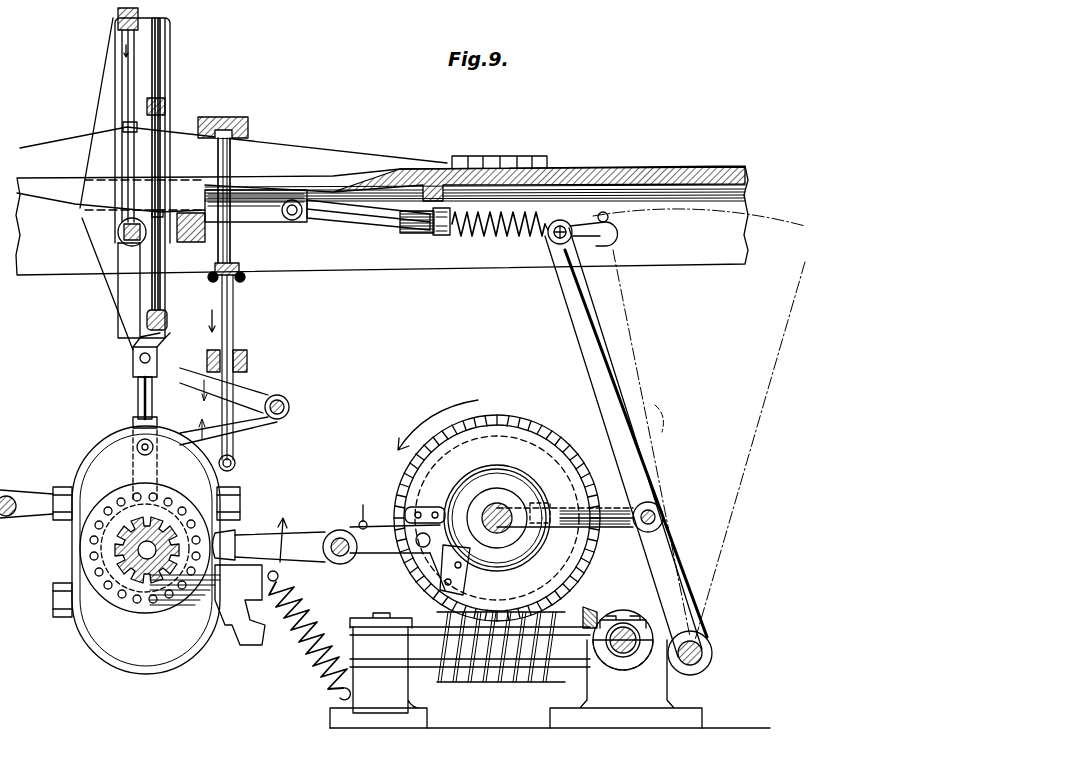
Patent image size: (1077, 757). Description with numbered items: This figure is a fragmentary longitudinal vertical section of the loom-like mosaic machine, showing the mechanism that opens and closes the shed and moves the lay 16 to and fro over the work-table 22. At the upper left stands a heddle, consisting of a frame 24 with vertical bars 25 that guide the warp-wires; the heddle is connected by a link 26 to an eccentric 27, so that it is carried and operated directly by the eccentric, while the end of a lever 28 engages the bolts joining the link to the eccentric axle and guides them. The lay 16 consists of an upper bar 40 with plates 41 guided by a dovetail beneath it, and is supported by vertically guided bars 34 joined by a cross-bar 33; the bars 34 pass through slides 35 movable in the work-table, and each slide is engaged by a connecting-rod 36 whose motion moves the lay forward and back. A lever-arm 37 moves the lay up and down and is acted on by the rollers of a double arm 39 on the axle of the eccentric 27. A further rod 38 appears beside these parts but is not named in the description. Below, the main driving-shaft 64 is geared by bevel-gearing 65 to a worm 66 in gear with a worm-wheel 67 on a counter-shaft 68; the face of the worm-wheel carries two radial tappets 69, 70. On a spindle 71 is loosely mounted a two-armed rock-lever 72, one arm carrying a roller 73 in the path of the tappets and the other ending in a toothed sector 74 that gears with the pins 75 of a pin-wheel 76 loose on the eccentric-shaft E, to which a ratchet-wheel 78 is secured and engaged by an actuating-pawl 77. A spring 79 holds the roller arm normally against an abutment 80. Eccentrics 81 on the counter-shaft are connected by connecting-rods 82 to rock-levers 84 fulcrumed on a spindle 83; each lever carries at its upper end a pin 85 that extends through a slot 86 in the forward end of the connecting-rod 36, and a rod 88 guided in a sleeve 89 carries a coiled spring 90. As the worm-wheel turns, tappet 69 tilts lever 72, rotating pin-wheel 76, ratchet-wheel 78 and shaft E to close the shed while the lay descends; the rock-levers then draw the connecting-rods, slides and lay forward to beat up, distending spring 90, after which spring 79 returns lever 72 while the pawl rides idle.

The lay 16 is at (244, 128).
The work-table 22 is at (620, 172).
The frame 24 is at (120, 105).
The vertical bars 25 is at (128, 80).
The link 26 is at (135, 300).
The eccentric 27 is at (98, 455).
The lever 28 is at (242, 396).
The cross-bar 33 is at (242, 270).
The vertically-guided bars 34 is at (230, 240).
The slides 35 is at (292, 222).
The connecting-rod 36 is at (375, 224).
The lever-arm 37 is at (38, 492).
The rod 38 is at (234, 324).
The double arm 39 is at (147, 586).
The upper bar 40 is at (210, 118).
The plates 41 is at (234, 136).
The main driving-shaft 64 is at (626, 636).
The bevel-gearing 65 is at (592, 608).
The worm 66 is at (490, 680).
The worm-wheel 67 is at (545, 432).
The counter-shaft 68 is at (505, 545).
The radial tappet 69 is at (428, 507).
The radial tappet 70 is at (440, 572).
The spindle 71 is at (340, 530).
The two-armed rock-lever 72 is at (300, 545).
The roller 73 is at (420, 560).
The toothed sector 74 is at (226, 632).
The pins 75 is at (92, 524).
The pin-wheel 76 is at (95, 548).
The actuating-pawl 77 is at (232, 482).
The ratchet-wheel 78 is at (80, 472).
The spring 79 is at (302, 658).
The abutment 80 is at (362, 507).
The eccentrics 81 is at (392, 518).
The connecting-rods 82 is at (606, 526).
The spindle 83 is at (704, 650).
The rock-lever 84 is at (640, 432).
The pin 85 is at (556, 244).
The slot 86 is at (605, 248).
The rod 88 is at (410, 232).
The sleeve 89 is at (440, 236).
The coiled spring 90 is at (500, 237).
The eccentric-shaft E is at (235, 535).